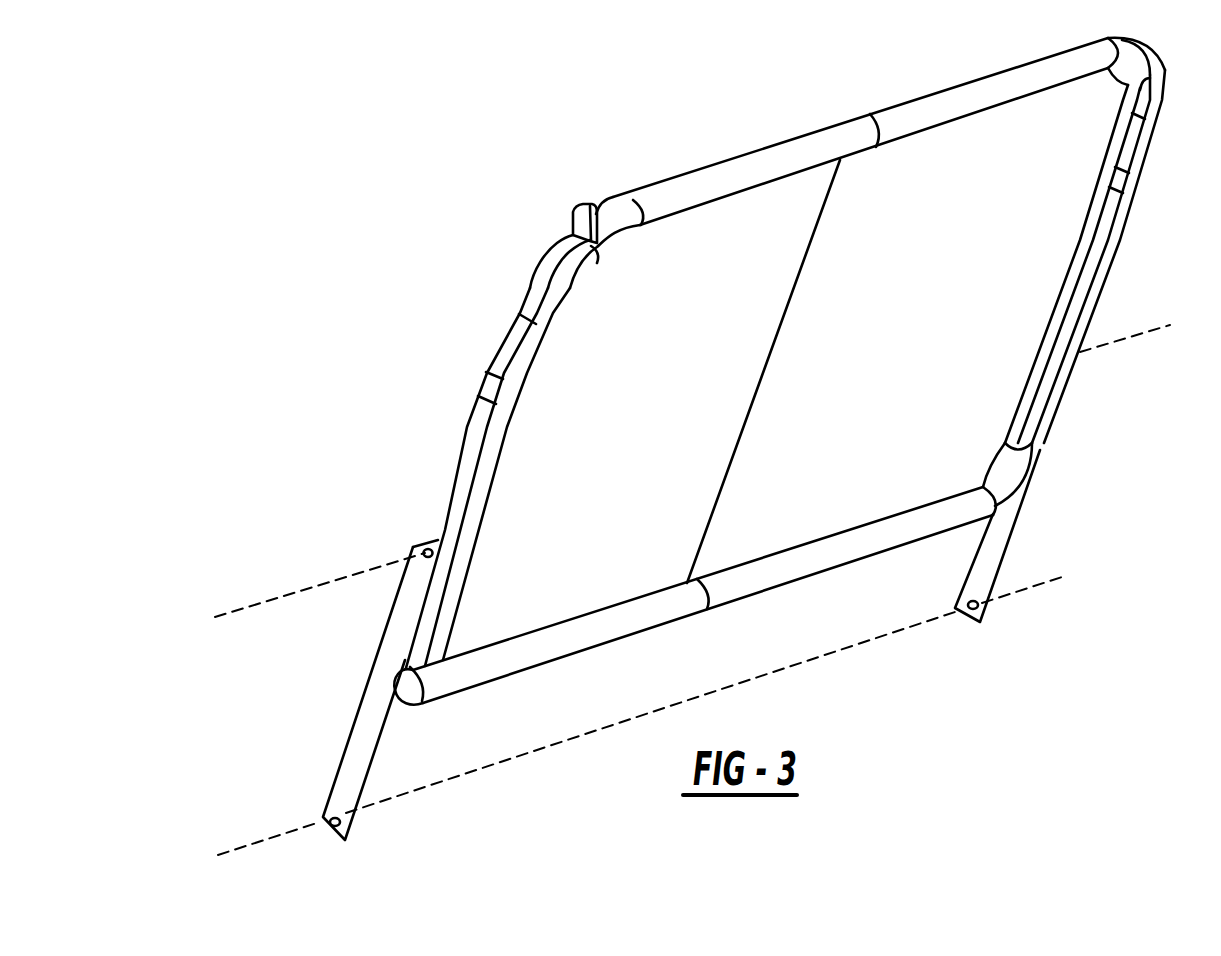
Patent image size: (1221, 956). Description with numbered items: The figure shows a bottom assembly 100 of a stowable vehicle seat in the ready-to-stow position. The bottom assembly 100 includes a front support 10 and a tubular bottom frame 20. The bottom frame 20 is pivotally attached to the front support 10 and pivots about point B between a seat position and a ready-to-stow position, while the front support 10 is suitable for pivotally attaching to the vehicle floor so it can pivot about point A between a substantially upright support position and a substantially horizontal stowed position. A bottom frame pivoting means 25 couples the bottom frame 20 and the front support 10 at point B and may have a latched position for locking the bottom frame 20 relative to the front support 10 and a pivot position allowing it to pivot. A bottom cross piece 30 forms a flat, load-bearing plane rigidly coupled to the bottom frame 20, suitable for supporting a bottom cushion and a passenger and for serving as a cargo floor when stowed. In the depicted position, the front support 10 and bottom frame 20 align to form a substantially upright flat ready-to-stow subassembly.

The bottom assembly 100 is at (701, 456).
The front support 10 is at (352, 748).
The bottom frame 20 is at (464, 427).
The bottom frame pivoting means 25 is at (427, 543).
The bottom cross piece 30 is at (1003, 210).